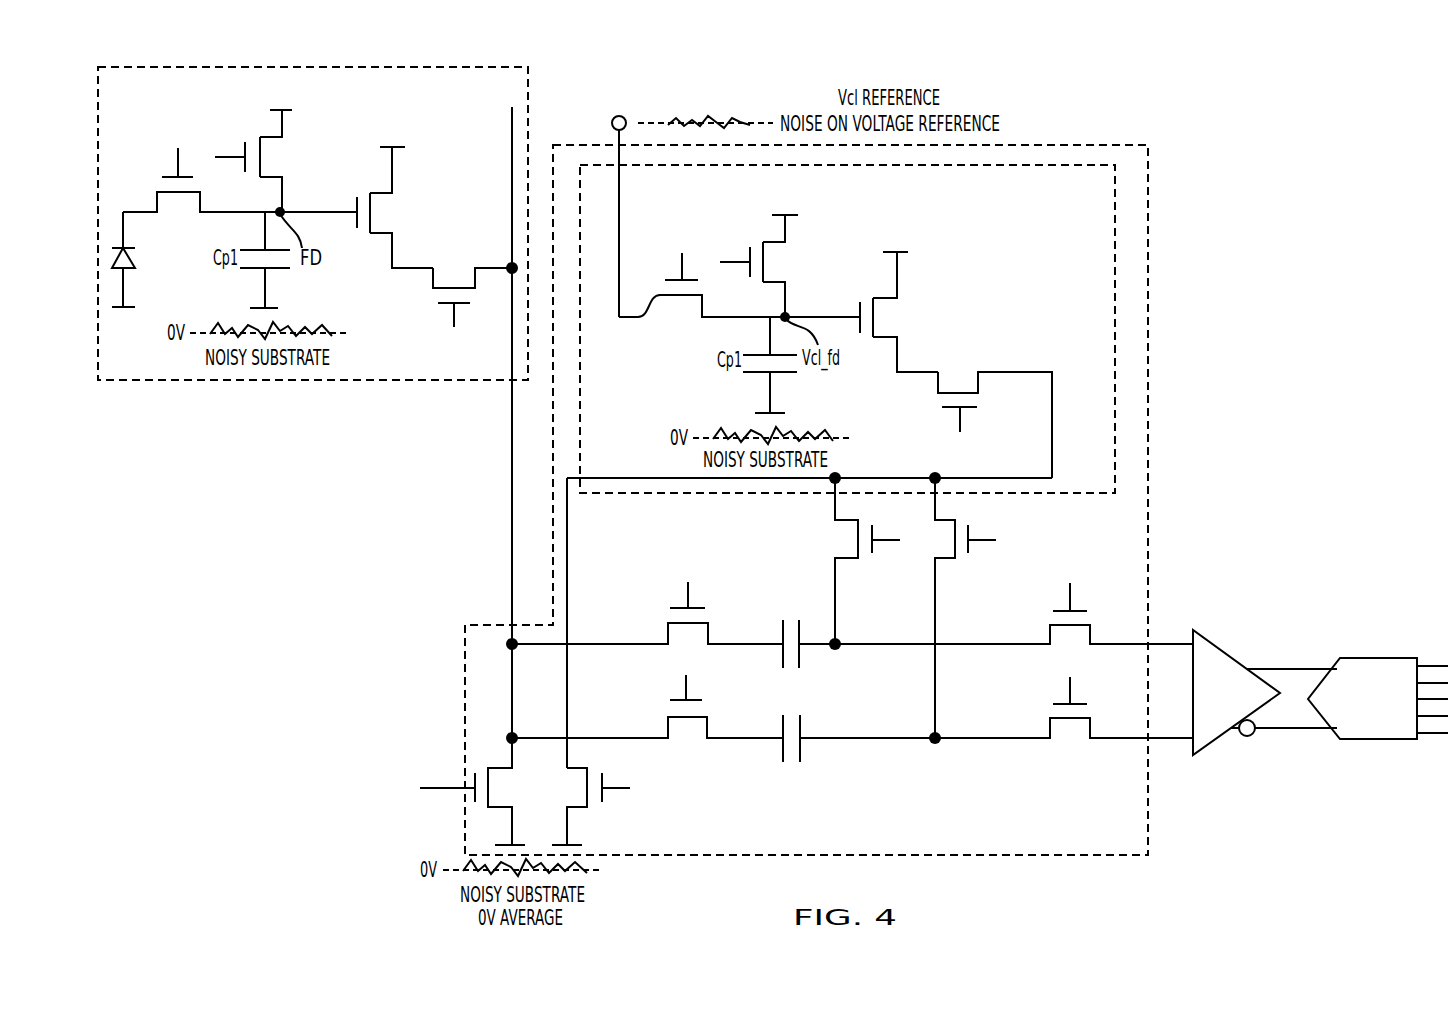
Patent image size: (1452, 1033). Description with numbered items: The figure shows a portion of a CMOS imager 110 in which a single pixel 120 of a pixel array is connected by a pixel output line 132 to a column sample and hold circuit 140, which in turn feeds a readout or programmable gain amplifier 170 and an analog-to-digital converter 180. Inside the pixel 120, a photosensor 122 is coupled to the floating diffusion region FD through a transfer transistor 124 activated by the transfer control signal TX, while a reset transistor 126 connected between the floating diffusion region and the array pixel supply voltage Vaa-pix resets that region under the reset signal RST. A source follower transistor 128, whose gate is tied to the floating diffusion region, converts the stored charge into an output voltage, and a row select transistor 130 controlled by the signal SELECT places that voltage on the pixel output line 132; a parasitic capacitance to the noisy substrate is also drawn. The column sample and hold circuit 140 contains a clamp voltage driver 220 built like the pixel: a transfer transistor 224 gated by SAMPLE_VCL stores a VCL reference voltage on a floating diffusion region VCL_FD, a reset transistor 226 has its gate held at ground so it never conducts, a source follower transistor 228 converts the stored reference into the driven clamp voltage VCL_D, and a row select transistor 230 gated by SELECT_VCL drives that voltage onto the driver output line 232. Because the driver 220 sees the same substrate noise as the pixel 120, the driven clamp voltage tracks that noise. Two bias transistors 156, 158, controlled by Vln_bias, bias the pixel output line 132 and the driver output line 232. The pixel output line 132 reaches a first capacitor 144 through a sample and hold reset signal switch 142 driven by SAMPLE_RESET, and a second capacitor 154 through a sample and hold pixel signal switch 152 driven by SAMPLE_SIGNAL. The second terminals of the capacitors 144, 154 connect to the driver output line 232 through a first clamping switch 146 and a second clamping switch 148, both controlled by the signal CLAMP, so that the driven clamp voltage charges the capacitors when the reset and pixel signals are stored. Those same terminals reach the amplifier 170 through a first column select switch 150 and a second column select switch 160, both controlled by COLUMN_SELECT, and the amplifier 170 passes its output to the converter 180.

The CMOS imager 110 is at (1195, 167).
The pixel 120 is at (252, 382).
The photosensor 122 is at (128, 258).
The transfer transistor 124 is at (157, 192).
The reset transistor 126 is at (260, 177).
The source follower transistor 128 is at (392, 195).
The row select transistor 130 is at (433, 288).
The pixel output line 132 is at (512, 493).
The column sample and hold circuit 140 is at (1148, 212).
The sample and hold reset signal switch 142 is at (708, 623).
The first capacitor 144 is at (793, 612).
The first clamping switch 146 is at (858, 560).
The second clamping switch 148 is at (955, 560).
The first column select switch 150 is at (1050, 625).
The sample and hold pixel signal switch 152 is at (707, 740).
The second capacitor 154 is at (791, 768).
The bias transistor 156 is at (488, 808).
The bias transistor 158 is at (587, 808).
The second column select switch 160 is at (1050, 742).
The programmable gain amplifier 170 is at (1218, 740).
The analog-to-digital converter 180 is at (1357, 742).
The clamp voltage driver 220 is at (1115, 282).
The transfer transistor 224 is at (646, 312).
The reset transistor 226 is at (763, 283).
The source follower transistor 228 is at (897, 299).
The row select transistor 230 is at (938, 393).
The driver output line 232 is at (568, 515).